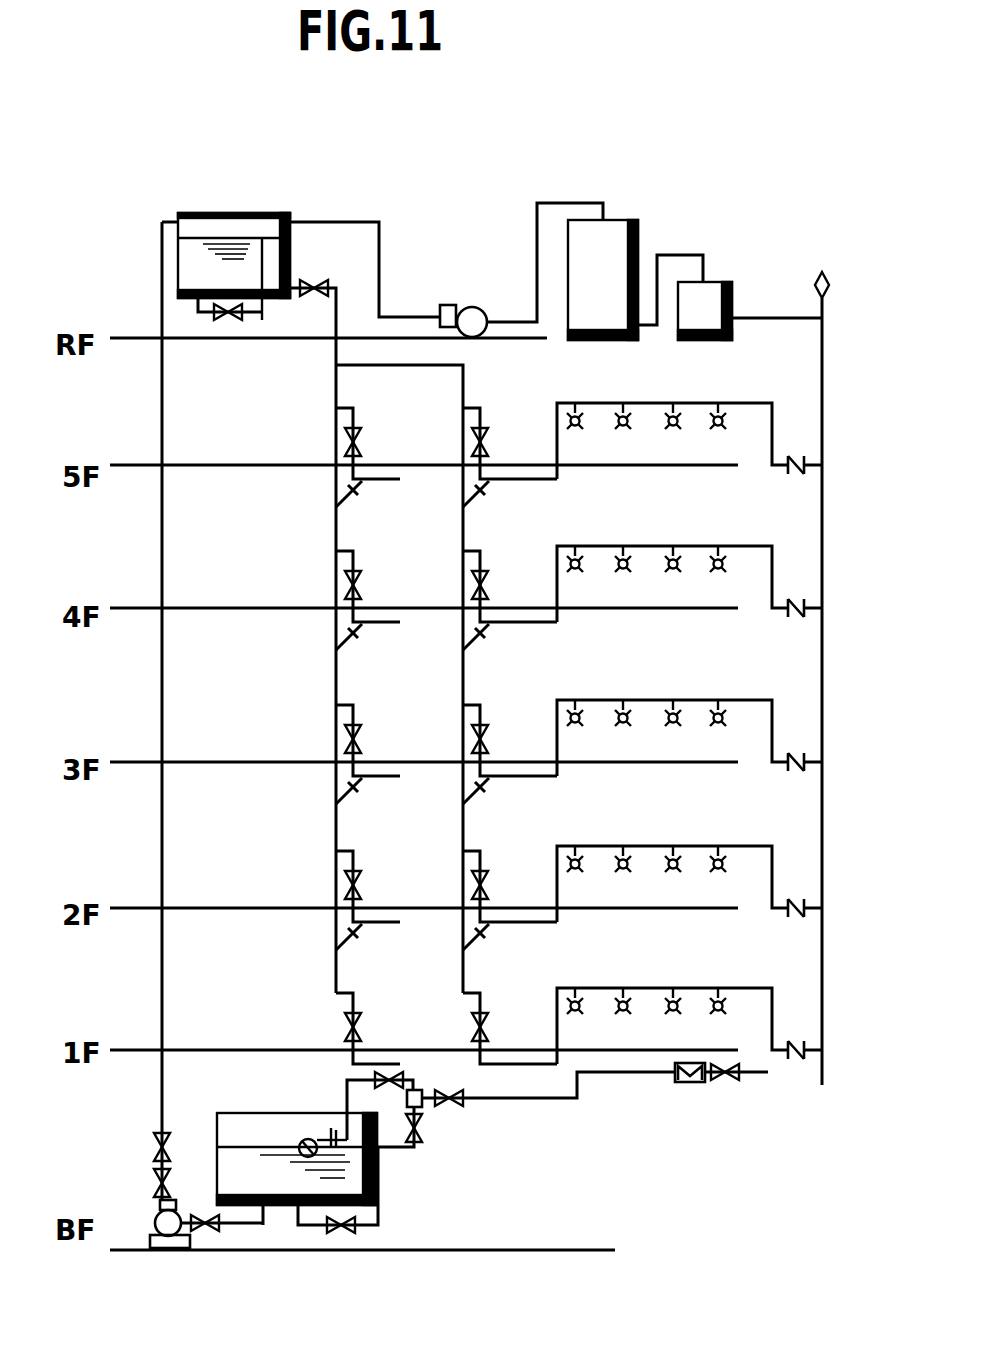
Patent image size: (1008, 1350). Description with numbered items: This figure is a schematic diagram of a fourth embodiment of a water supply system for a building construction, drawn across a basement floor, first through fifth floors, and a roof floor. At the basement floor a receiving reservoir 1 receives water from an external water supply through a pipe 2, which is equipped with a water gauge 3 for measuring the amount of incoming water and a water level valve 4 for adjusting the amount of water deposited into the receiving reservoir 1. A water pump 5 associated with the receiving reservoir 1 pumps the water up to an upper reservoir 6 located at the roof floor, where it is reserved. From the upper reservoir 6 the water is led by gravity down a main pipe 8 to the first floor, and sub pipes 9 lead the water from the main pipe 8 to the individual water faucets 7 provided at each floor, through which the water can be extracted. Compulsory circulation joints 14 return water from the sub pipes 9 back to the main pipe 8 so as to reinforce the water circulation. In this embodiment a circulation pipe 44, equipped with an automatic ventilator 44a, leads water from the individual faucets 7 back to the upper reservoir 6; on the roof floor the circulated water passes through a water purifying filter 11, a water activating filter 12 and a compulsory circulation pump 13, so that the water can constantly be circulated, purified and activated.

The receiving reservoir 1 is at (363, 1207).
The pipe 2 is at (520, 1102).
The water gauge 3 is at (688, 1083).
The water level valve 4 is at (422, 1102).
The water pump 5 is at (153, 1220).
The upper reservoir 6 is at (220, 212).
The water faucets 7 is at (728, 423).
The main pipe 8 is at (336, 678).
The sub pipes 9 is at (656, 751).
The water purifying filter 11 is at (715, 282).
The water activating filter 12 is at (610, 220).
The compulsory circulation pump 13 is at (483, 303).
The compulsory circulation joints 14 is at (467, 507).
The circulation pipe 44 is at (858, 658).
The automatic ventilator 44a is at (824, 272).